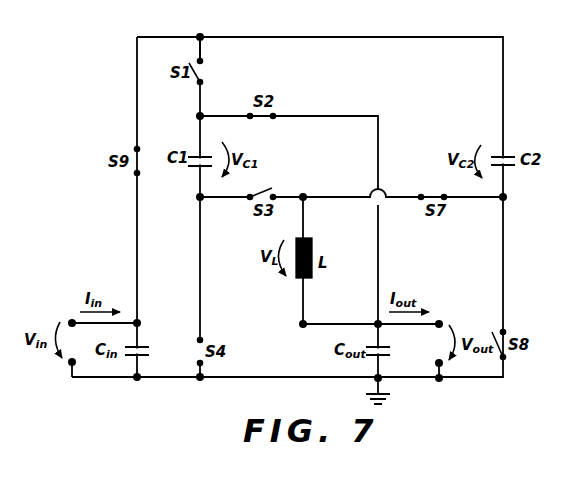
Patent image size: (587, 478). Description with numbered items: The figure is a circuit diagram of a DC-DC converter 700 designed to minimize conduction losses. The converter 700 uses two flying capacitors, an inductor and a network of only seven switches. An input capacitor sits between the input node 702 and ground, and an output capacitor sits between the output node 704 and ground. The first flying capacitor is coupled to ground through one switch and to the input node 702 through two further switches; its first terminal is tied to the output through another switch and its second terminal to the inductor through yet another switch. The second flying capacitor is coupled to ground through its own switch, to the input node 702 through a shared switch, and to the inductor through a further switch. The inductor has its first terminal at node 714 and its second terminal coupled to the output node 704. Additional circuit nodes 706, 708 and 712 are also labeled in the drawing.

The DC-DC converter 700 is at (78, 87).
The input node 702 is at (136, 321).
The output node 704 is at (376, 323).
The node 706 is at (199, 116).
The node 708 is at (199, 197).
The node 712 is at (505, 197).
The node 714 is at (304, 196).